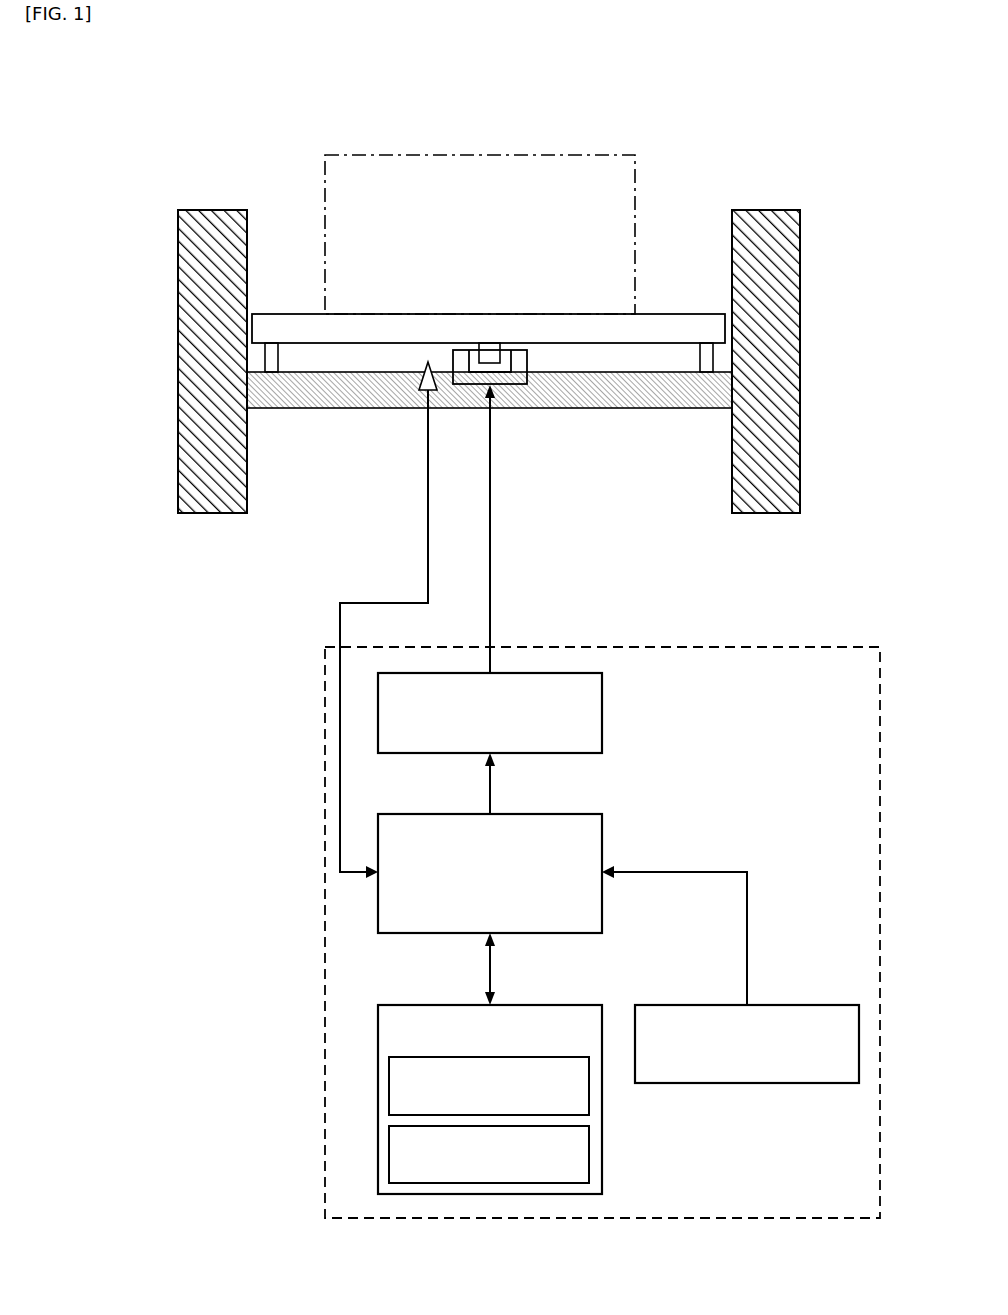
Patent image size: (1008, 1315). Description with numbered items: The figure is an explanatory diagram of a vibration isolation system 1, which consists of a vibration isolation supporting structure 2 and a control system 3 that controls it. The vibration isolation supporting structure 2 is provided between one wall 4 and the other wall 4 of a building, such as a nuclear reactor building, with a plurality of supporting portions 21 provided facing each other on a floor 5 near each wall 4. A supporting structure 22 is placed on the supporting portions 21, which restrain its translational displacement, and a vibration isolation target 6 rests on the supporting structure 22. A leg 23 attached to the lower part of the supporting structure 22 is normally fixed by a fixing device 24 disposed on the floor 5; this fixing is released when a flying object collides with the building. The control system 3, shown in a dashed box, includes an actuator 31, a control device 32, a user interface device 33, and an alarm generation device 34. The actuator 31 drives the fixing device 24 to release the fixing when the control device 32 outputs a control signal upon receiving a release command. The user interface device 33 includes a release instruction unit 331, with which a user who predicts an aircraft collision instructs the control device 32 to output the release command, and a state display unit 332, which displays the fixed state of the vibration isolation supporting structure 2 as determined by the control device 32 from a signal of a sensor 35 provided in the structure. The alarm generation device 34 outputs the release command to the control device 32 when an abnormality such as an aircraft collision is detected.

The vibration isolation system 1 is at (733, 150).
The vibration isolation supporting structure 2 is at (488, 360).
The control system 3 is at (832, 642).
The wall 4 is at (178, 266).
The floor 5 is at (365, 408).
The vibration isolation target 6 is at (490, 155).
The supporting portion 21 is at (267, 358).
The supporting structure 22 is at (301, 323).
The leg 23 is at (487, 315).
The fixing device 24 is at (536, 360).
The actuator 31 is at (602, 693).
The control device 32 is at (602, 818).
The user interface device 33 is at (449, 1069).
The alarm generation device 34 is at (776, 1005).
The sensor 35 is at (438, 380).
The release instruction unit 331 is at (389, 1082).
The state display unit 332 is at (389, 1150).